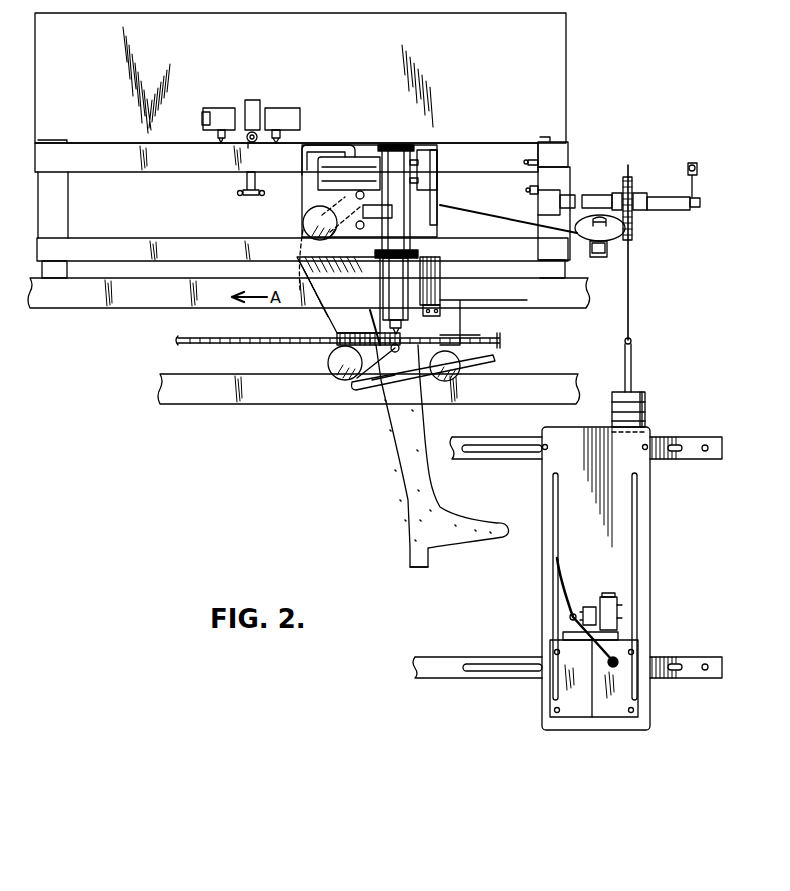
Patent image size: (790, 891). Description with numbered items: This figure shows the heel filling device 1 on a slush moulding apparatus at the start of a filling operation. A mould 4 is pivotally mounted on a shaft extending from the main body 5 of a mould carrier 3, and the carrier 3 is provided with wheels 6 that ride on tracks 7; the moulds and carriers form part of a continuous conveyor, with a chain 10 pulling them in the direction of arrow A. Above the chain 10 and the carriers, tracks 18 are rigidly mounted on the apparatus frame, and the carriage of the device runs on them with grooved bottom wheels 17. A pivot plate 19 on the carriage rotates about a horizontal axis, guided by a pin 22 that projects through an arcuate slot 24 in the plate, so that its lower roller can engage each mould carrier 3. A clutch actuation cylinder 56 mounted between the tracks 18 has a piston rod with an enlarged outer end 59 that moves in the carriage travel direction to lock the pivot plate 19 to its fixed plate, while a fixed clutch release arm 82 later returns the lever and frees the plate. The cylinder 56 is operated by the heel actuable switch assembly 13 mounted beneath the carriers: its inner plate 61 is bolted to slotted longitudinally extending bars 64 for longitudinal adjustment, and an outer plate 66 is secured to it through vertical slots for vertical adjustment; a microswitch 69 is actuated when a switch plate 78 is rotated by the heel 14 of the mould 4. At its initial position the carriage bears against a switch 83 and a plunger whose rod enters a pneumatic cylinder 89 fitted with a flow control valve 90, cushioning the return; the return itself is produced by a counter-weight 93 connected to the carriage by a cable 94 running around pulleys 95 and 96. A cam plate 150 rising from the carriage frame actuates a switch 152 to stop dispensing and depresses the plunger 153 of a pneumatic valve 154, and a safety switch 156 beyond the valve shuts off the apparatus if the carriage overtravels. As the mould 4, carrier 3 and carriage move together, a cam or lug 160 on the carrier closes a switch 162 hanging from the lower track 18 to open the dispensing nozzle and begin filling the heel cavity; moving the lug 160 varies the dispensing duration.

The heel filling device 1 is at (450, 127).
The mould carrier 3 is at (452, 338).
The mould 4 is at (407, 442).
The main body 5 is at (340, 333).
The wheels 6 is at (330, 363).
The tracks 7 is at (522, 380).
The chain 10 is at (200, 340).
The heel actuable switch assembly 13 is at (640, 567).
The heel 14 is at (421, 570).
The bottom wheels 17 is at (310, 214).
The tracks 18 is at (157, 163).
The pivot plate 19 is at (351, 304).
The pin 22 is at (345, 197).
The arcuate slot 24 is at (300, 265).
The clutch actuation cylinder 56 is at (550, 188).
The enlarged outer end 59 is at (530, 190).
The inner plate 61 is at (584, 549).
The longitudinally extending bars 64 is at (487, 459).
The outer plate 66 is at (573, 707).
The microswitch 69 is at (607, 617).
The switch plate 78 is at (563, 598).
The clutch release arm 82 is at (247, 183).
The switch 83 is at (548, 140).
The pneumatic cylinder 89 is at (599, 195).
The flow control valve 90 is at (688, 168).
The counter-weight 93 is at (645, 412).
The cable 94 is at (458, 237).
The pulley 95 is at (633, 222).
The pulley 96 is at (597, 257).
The cam plate 150 is at (335, 158).
The switch 152 is at (283, 108).
The plunger 153 is at (250, 143).
The pneumatic valve 154 is at (252, 100).
The safety switch 156 is at (222, 108).
The cam or lug 160 is at (448, 310).
The switch 162 is at (452, 303).